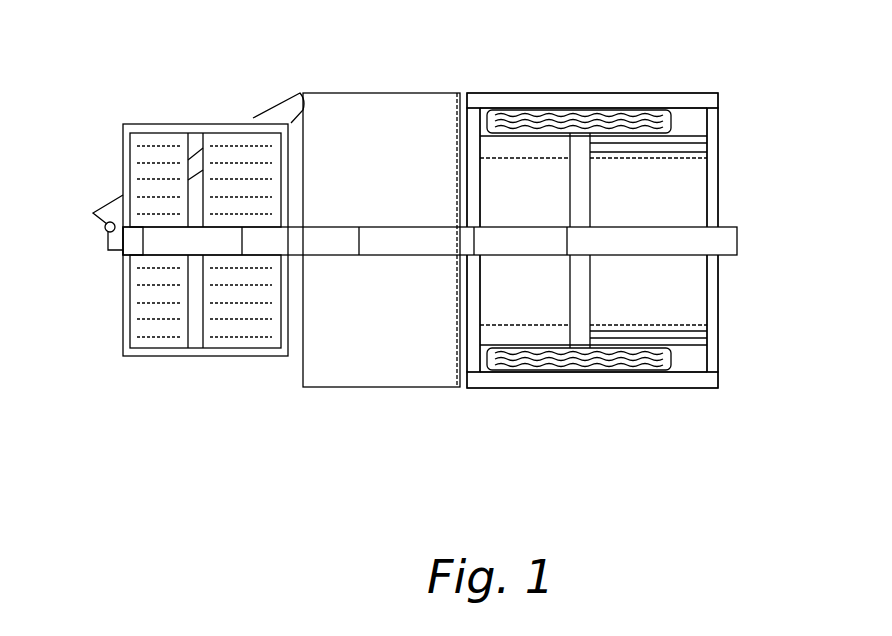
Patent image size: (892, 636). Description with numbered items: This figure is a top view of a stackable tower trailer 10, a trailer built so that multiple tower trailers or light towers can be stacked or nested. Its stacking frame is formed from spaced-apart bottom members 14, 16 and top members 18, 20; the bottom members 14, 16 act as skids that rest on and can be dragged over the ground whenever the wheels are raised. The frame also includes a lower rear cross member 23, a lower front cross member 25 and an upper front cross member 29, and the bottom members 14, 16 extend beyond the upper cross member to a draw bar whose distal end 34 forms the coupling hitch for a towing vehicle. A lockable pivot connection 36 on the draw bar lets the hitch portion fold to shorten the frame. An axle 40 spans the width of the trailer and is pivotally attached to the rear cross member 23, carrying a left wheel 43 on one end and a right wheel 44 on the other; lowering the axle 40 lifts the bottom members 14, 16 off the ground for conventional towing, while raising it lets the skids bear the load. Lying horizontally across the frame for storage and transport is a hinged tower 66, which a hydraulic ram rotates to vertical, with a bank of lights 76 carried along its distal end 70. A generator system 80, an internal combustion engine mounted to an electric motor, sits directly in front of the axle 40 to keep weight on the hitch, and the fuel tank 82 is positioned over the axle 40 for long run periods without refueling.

The stackable tower trailer 10 is at (757, 67).
The bottom member 14 is at (695, 345).
The bottom member 16 is at (705, 135).
The top member 18 is at (718, 388).
The top member 20 is at (718, 93).
The lower rear cross member 23 is at (718, 310).
The lower front cross member 25 is at (480, 198).
The upper front cross member 29 is at (480, 292).
The distal end 34 is at (282, 103).
The lockable pivot connection 36 is at (105, 232).
The axle 40 is at (590, 287).
The left wheel 43 is at (670, 368).
The right wheel 44 is at (647, 112).
The hinged tower 66 is at (392, 257).
The distal end 70 is at (123, 257).
The bank of lights 76 is at (210, 357).
The generator system 80 is at (363, 387).
The fuel tank 82 is at (690, 203).